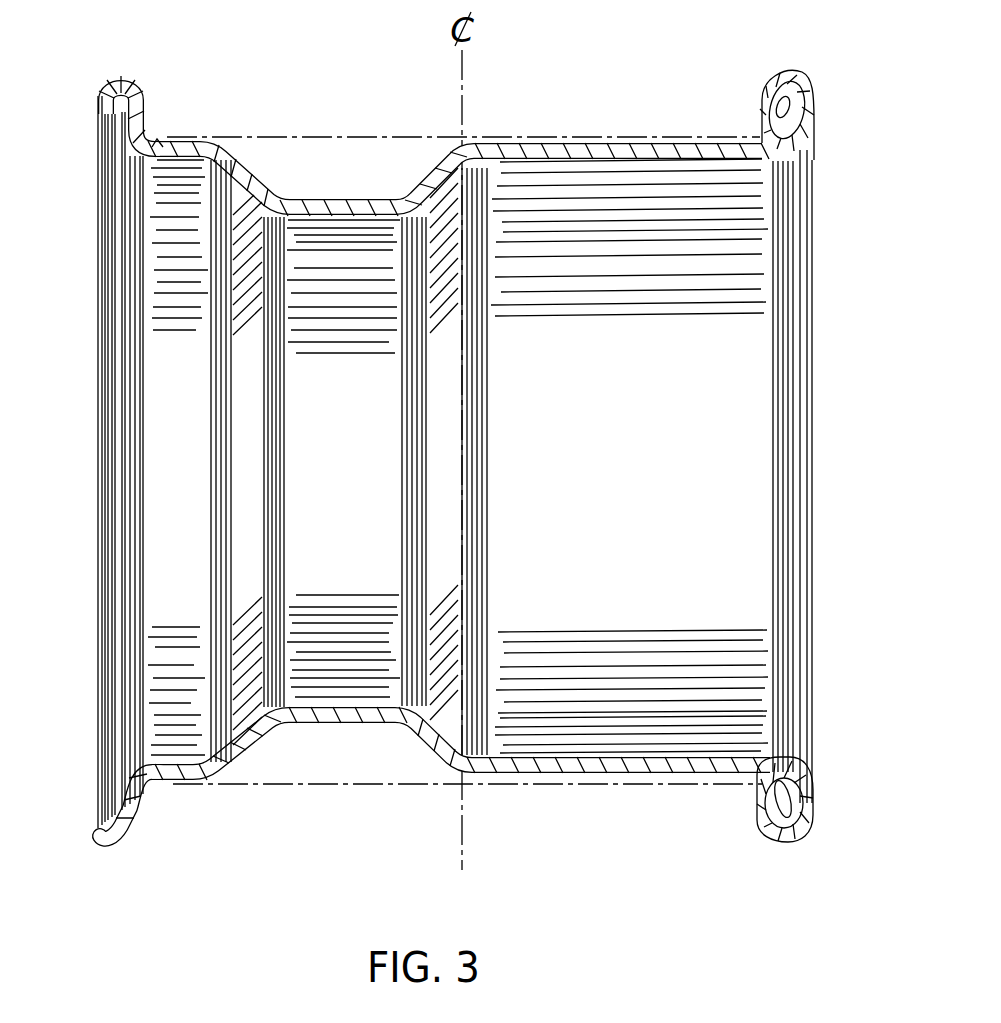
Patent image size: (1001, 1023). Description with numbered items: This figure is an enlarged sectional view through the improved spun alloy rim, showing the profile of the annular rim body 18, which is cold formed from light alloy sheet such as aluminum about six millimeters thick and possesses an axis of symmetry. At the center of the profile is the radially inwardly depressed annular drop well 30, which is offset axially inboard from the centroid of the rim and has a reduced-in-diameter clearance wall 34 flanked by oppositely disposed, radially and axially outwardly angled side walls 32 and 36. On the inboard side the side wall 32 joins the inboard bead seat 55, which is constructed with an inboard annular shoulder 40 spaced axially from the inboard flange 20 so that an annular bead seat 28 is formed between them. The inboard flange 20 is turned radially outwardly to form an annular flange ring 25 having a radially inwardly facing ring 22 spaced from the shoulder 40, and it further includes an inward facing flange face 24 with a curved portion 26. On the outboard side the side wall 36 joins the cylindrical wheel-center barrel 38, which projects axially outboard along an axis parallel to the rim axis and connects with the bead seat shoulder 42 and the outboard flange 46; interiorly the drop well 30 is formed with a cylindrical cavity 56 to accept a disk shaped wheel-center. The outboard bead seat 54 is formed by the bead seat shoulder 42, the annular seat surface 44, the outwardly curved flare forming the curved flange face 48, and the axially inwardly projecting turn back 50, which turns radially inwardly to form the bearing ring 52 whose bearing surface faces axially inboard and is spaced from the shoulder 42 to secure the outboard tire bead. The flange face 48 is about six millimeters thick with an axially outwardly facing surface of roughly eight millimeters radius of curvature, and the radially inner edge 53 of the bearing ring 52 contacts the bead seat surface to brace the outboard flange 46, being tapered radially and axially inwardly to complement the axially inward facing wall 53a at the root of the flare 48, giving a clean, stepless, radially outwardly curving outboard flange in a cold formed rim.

The annular rim body 18 is at (598, 788).
The inboard flange 20 is at (120, 64).
The radially inwardly facing ring 22 is at (97, 85).
The inward facing flange face 24 is at (113, 112).
The annular flange ring 25 is at (136, 95).
The curved portion 26 is at (118, 142).
The annular bead seat 28 is at (186, 140).
The drop well 30 is at (310, 200).
The side wall 32 is at (266, 165).
The clearance wall 34 is at (354, 199).
The side wall 36 is at (425, 175).
The cylindrical wheel-center barrel 38 is at (485, 140).
The inboard annular shoulder 40 is at (233, 140).
The bead seat shoulder 42 is at (684, 140).
The annular seat surface 44 is at (749, 133).
The outboard flange 46 is at (810, 62).
The radially outwardly curved flange face 48 is at (812, 93).
The turn back 50 is at (787, 73).
The bearing ring 52 is at (760, 126).
The radially inner edge 53 is at (783, 143).
The axially inward facing wall 53a is at (773, 138).
The outboard bead seat 54 is at (719, 145).
The inboard bead seat 55 is at (160, 127).
The cylindrical cavity 56 is at (567, 163).